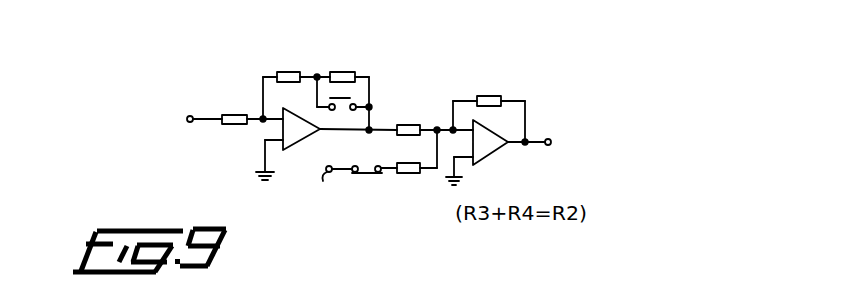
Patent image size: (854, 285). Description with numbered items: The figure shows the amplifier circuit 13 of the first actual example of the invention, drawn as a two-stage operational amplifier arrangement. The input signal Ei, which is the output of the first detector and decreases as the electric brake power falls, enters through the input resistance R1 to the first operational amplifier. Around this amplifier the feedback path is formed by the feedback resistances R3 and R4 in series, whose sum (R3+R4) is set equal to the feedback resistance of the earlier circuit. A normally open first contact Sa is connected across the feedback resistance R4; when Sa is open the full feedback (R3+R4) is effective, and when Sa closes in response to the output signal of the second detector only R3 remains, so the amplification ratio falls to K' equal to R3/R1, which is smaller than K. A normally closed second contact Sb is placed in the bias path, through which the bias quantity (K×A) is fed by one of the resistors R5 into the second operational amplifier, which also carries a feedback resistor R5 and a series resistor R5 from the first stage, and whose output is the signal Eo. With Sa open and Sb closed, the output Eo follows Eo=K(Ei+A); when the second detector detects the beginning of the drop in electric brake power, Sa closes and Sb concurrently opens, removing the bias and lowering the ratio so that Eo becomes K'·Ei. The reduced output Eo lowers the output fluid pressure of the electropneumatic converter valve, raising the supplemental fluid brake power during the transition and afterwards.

The output signal of the first detector Ei is at (190, 119).
The input resistance R1 is at (236, 112).
The feedback resistance R3 is at (296, 70).
The feedback resistance R4 is at (348, 70).
The resistor R5 is at (405, 123).
The first contact Sa is at (350, 98).
The second contact Sb is at (371, 167).
The amplifier circuit 13 is at (494, 159).
The output of amplifier circuit Eo is at (544, 141).